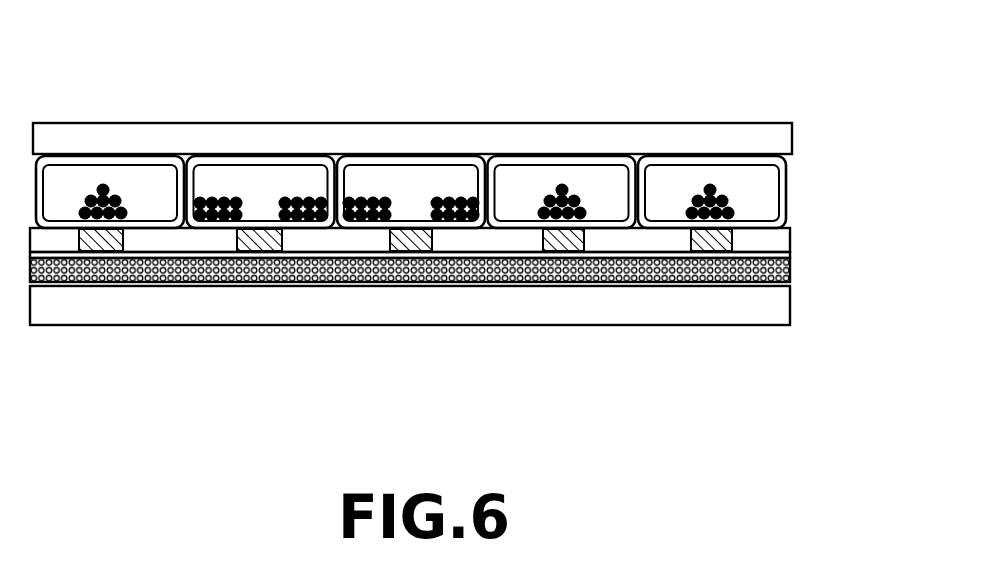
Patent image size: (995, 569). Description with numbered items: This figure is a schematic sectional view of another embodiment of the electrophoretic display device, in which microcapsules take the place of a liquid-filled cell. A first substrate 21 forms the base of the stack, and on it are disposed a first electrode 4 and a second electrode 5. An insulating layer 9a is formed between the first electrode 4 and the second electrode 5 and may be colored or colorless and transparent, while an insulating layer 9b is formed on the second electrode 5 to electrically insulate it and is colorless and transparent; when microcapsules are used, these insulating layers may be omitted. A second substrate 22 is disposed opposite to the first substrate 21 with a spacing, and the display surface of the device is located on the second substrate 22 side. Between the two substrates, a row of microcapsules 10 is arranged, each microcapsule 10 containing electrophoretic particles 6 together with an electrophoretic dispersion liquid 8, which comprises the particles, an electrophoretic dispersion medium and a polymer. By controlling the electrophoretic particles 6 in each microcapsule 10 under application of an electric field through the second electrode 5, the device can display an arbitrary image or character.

The first electrode 4 is at (790, 273).
The second electrode 5 is at (108, 252).
The electrophoretic particles 6 is at (224, 200).
The electrophoretic dispersion liquid 8 is at (528, 186).
The insulating layer 9a is at (790, 254).
The insulating layer 9b is at (790, 238).
The microcapsule 10 is at (790, 197).
The first substrate 21 is at (643, 325).
The second substrate 22 is at (752, 123).